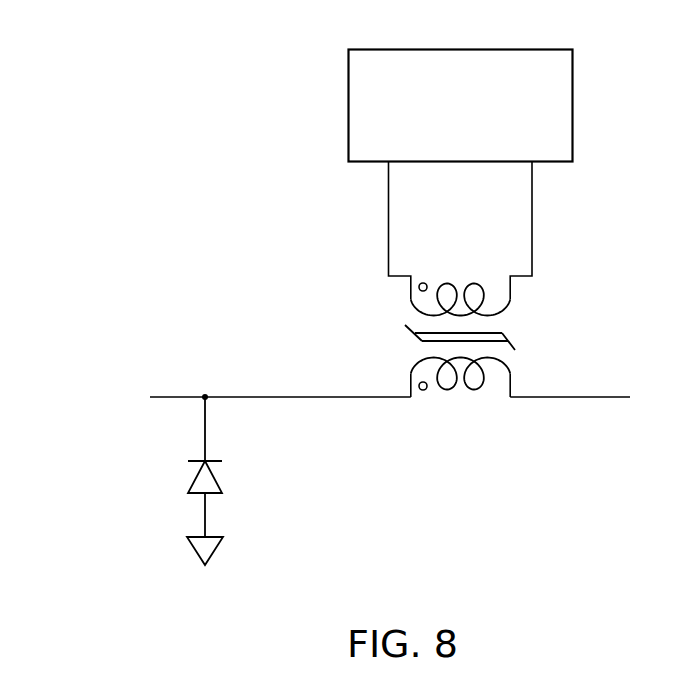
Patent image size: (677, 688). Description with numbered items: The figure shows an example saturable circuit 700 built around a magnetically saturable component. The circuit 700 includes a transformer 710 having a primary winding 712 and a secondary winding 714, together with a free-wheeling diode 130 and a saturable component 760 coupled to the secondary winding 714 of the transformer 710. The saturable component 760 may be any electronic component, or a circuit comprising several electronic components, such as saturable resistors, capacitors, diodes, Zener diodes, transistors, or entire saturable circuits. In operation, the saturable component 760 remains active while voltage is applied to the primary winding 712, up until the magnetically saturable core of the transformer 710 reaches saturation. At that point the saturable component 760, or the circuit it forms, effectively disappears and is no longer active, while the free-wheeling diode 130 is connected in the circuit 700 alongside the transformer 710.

The saturable circuit 700 is at (373, 261).
The saturable component 760 is at (497, 84).
The secondary winding 714 is at (506, 245).
The transformer 710 is at (406, 302).
The primary winding 712 is at (462, 432).
The free-wheeling diode 130 is at (144, 481).